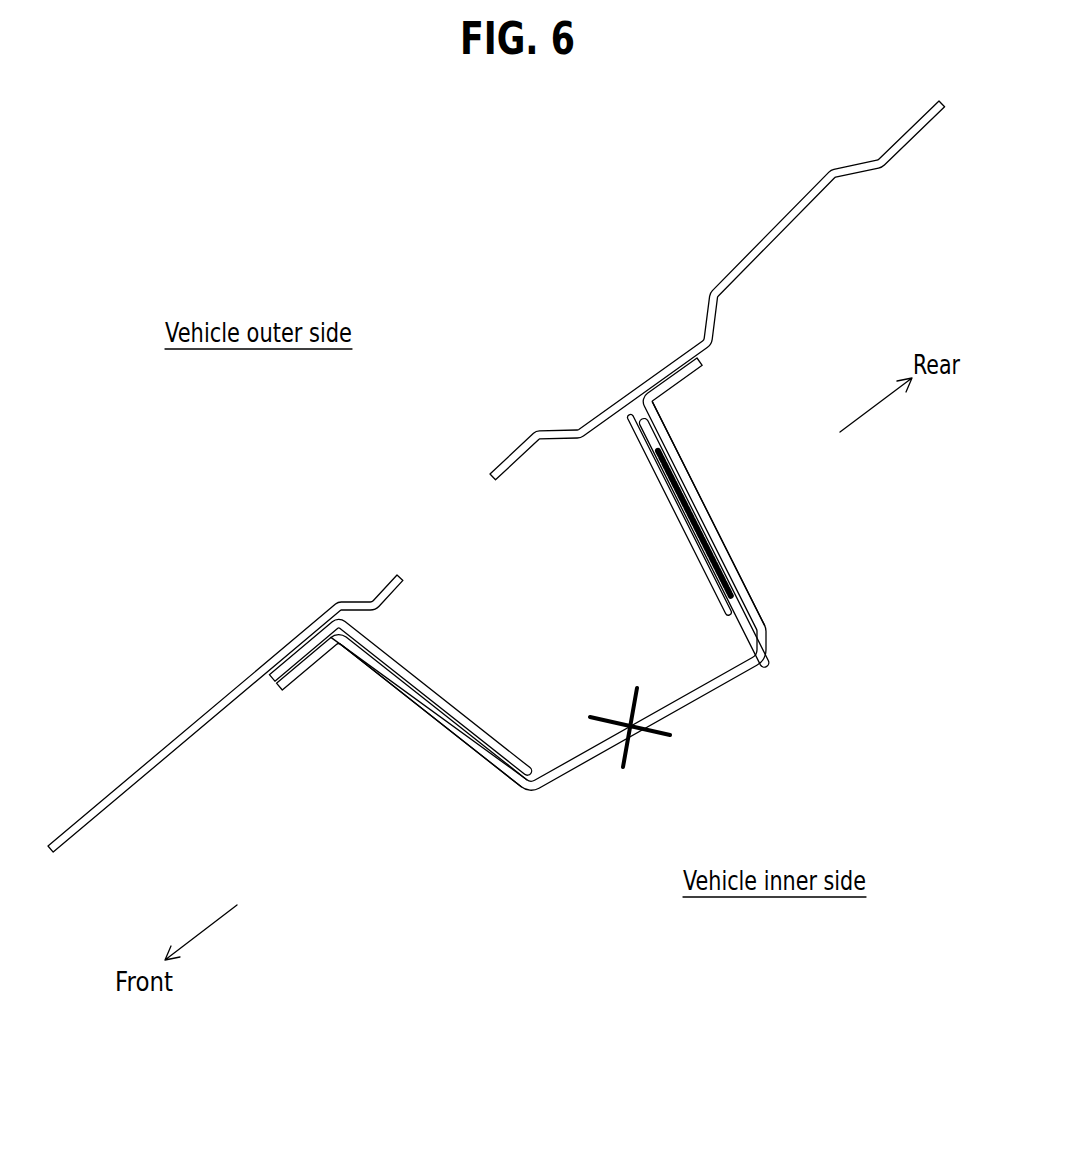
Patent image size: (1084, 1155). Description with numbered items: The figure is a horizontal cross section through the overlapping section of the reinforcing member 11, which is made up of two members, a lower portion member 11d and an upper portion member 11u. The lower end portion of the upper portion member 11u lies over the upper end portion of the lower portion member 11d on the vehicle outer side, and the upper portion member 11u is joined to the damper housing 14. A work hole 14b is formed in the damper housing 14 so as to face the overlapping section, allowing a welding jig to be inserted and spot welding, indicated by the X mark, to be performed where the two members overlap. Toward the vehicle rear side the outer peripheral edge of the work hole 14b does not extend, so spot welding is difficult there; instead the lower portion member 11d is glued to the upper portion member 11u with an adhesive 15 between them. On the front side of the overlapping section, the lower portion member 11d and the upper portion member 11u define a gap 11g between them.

The damper housing 14 is at (741, 243).
The work hole 14b is at (406, 565).
The reinforcing member 11 is at (740, 696).
The upper portion member 11u is at (450, 702).
The lower portion member 11d is at (736, 568).
The gap 11g is at (448, 738).
The adhesive 15 is at (700, 499).